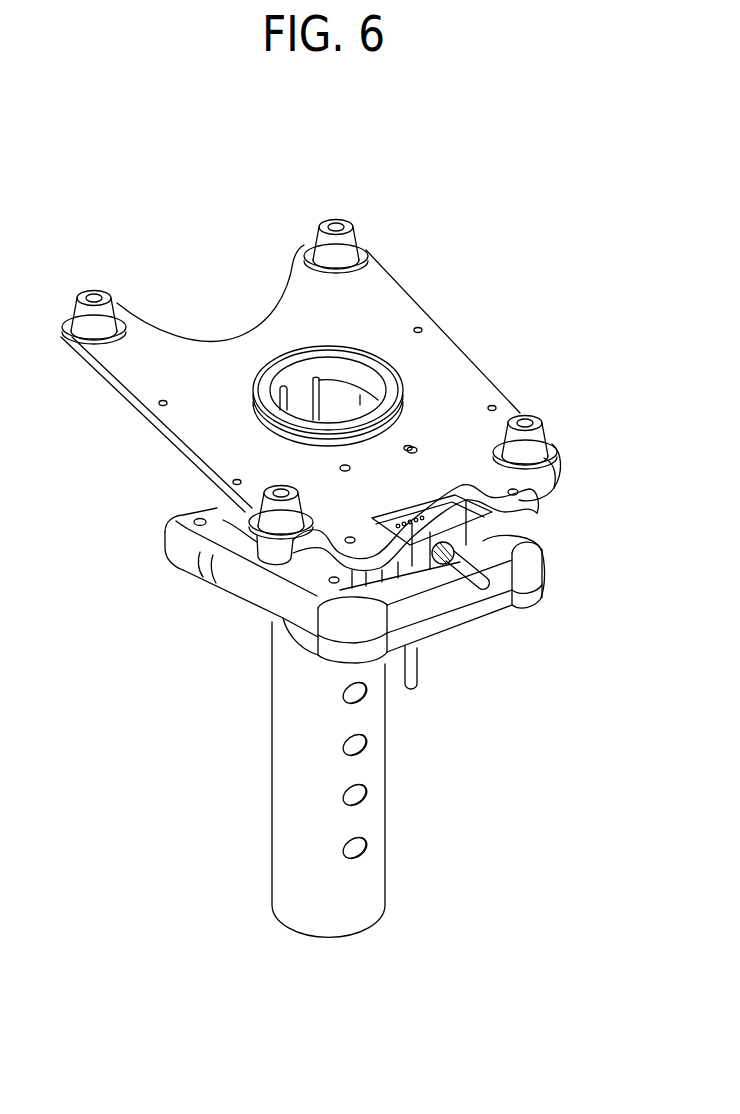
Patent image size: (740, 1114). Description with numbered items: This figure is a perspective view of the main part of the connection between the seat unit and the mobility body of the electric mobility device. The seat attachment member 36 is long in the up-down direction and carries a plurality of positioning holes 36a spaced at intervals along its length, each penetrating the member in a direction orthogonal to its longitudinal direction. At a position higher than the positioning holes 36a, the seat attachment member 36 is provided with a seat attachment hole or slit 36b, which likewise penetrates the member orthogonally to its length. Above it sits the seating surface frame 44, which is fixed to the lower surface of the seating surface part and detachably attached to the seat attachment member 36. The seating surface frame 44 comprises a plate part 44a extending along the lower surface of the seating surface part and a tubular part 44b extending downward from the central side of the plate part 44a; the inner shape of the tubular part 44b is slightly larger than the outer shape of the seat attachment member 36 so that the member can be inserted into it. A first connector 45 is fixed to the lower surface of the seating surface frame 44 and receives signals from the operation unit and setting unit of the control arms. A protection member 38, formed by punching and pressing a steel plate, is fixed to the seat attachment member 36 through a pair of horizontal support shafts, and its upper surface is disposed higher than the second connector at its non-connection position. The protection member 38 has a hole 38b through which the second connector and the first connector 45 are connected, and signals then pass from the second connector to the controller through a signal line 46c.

The seat attachment member 36 is at (272, 888).
The positioning holes 36a is at (366, 700).
The seat attachment hole or slit 36b is at (323, 393).
The protection member 38 is at (531, 599).
The hole 38b is at (487, 537).
The seating surface frame 44 is at (480, 372).
The plate part 44a is at (400, 320).
The tubular part 44b is at (300, 370).
The first connector 45 is at (378, 577).
The signal line 46c is at (420, 667).